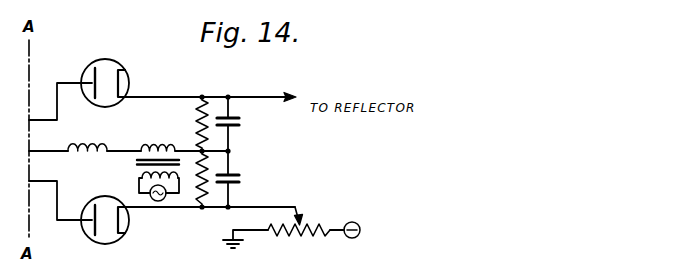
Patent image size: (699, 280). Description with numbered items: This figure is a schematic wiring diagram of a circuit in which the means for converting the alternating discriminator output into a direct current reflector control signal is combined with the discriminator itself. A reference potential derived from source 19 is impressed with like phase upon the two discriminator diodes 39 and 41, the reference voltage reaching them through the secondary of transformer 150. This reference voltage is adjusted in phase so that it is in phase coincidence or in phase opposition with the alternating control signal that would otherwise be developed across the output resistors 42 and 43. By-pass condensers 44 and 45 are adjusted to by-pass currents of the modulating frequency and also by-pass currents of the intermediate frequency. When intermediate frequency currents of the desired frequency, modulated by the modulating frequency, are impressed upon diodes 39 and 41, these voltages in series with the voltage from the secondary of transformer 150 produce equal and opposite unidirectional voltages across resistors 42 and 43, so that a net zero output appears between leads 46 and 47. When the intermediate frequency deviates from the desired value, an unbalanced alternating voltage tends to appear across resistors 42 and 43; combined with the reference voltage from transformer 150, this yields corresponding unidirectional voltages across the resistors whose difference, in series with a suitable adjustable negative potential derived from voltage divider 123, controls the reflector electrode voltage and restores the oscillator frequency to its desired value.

The diode 39 is at (124, 71).
The diode 41 is at (111, 244).
The output resistor 42 is at (200, 121).
The output resistor 43 is at (200, 197).
The by-pass condenser 44 is at (237, 124).
The by-pass condenser 45 is at (241, 181).
The lead 46 is at (292, 95).
The lead 47 is at (294, 208).
The source 19 is at (150, 209).
The transformer 150 is at (130, 168).
The voltage divider 123 is at (319, 236).